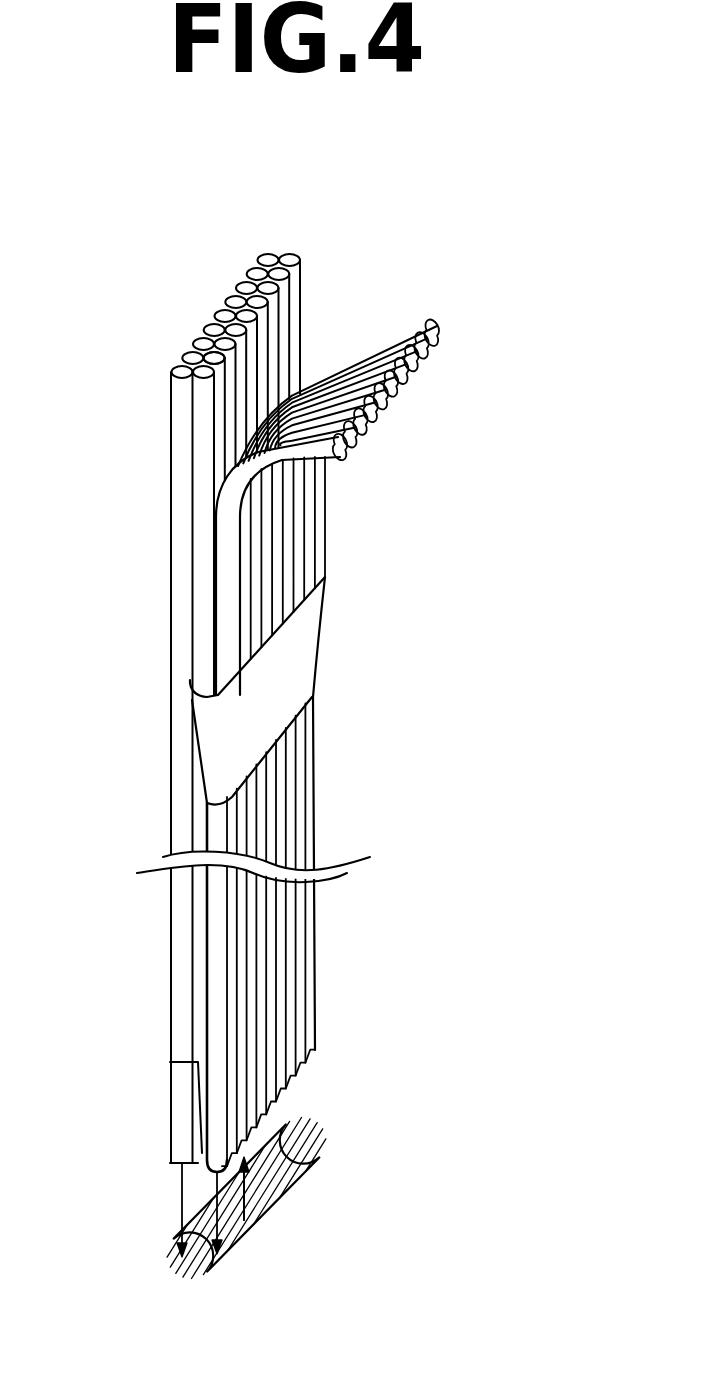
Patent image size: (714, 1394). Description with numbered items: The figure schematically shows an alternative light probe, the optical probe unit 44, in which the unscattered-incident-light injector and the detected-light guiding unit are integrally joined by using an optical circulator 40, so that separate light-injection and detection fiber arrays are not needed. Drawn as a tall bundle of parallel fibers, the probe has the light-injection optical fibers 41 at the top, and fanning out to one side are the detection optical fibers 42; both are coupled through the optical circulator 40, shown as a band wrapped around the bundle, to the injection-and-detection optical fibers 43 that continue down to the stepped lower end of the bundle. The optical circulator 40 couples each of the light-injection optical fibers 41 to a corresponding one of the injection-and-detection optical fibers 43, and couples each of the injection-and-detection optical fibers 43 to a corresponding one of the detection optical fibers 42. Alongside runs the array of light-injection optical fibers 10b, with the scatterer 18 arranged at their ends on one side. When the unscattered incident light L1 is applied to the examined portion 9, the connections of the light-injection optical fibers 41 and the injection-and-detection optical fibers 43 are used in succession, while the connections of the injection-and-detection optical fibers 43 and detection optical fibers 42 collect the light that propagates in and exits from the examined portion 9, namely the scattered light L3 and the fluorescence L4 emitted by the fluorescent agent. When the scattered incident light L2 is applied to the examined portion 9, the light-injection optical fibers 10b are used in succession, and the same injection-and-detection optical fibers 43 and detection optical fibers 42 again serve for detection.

The optical probe unit 44 is at (255, 221).
The detection optical fibers 42 is at (433, 332).
The light-injection optical fibers 41 is at (200, 350).
The light-injection optical fibers 10b is at (177, 358).
The optical circulator 40 is at (325, 633).
The injection-and-detection optical fibers 43 is at (310, 1053).
The examined portion 9 is at (305, 1162).
The scatterer 18 is at (170, 1097).
The unscattered incident light L1 is at (222, 1205).
The scattered incident light L2 is at (178, 1208).
The scattered light L3 is at (255, 1185).
The fluorescence L4 is at (255, 1185).